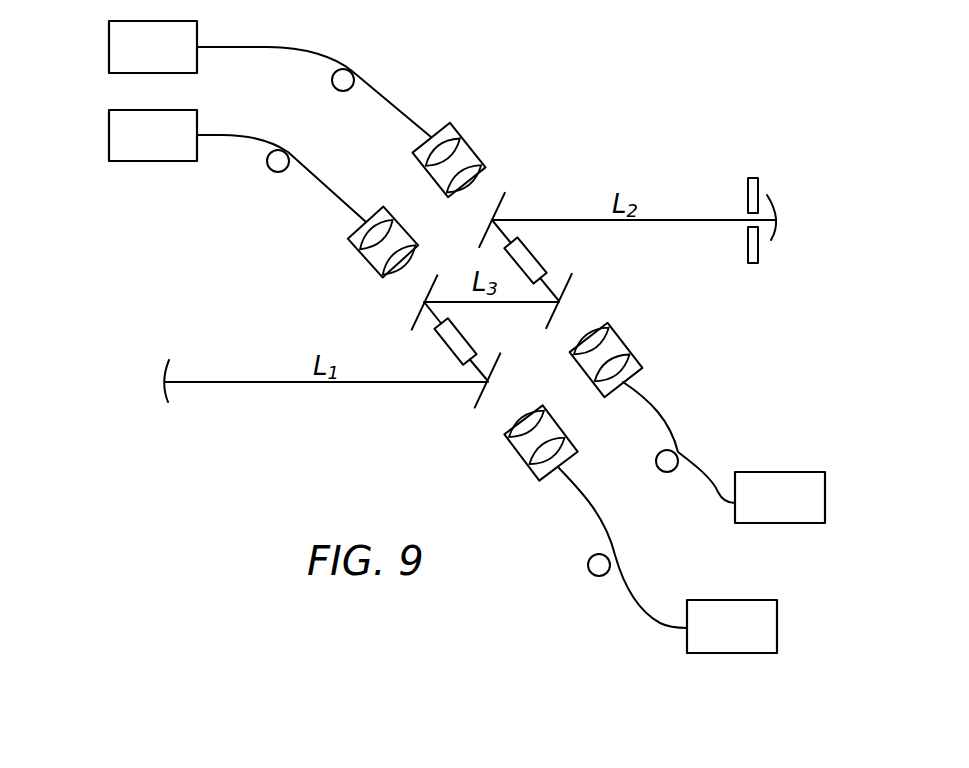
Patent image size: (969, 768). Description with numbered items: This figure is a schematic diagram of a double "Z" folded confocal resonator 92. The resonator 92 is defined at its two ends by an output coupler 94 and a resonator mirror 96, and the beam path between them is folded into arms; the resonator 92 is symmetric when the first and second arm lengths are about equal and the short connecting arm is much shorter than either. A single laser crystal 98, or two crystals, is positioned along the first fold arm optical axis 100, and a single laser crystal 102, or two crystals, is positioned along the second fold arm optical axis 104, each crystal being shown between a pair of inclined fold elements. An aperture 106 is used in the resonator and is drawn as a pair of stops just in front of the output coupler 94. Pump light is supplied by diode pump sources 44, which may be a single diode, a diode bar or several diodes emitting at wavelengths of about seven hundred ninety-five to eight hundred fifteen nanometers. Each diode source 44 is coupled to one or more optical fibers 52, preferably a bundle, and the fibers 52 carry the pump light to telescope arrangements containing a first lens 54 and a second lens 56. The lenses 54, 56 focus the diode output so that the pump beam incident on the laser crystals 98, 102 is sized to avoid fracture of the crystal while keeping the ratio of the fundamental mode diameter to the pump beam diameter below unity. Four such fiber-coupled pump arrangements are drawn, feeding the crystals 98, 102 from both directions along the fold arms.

The diode pump source 44 is at (109, 39).
The optical fiber 52 is at (242, 47).
The first lens 54 is at (458, 137).
The second lens 56 is at (483, 168).
The double "Z" folded confocal resonator 92 is at (698, 170).
The output coupler 94 is at (773, 202).
The resonator mirror 96 is at (163, 373).
The laser crystal 98 is at (468, 327).
The first fold arm optical axis 100 is at (479, 380).
The laser crystal 102 is at (530, 247).
The second fold arm optical axis 104 is at (555, 278).
The aperture 106 is at (750, 177).